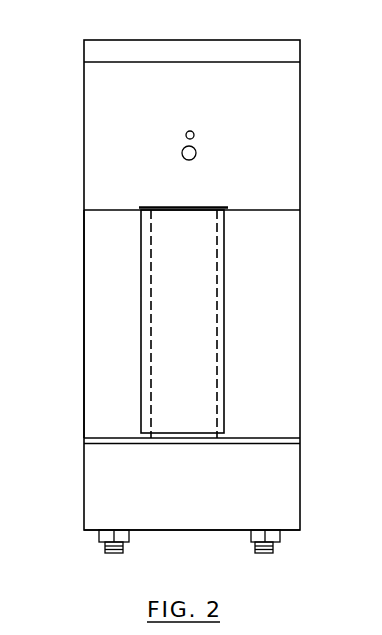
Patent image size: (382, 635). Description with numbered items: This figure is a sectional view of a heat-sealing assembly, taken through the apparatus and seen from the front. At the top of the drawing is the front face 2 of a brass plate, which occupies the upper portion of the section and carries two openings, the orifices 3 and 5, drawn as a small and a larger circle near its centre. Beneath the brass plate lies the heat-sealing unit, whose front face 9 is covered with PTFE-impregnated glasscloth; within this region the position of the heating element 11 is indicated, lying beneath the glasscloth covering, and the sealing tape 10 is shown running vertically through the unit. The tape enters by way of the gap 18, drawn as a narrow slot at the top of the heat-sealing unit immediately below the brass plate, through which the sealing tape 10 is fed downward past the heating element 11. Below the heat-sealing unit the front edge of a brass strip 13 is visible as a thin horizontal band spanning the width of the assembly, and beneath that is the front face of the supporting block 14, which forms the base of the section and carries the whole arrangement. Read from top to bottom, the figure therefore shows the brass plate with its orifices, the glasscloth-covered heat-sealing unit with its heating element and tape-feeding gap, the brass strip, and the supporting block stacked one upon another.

The front face 2 is at (91, 126).
The orifice 3 is at (196, 152).
The orifice 5 is at (194, 134).
The front face of the heat-sealing unit 9 is at (101, 272).
The sealing tape 10 is at (141, 363).
The heating element 11 is at (165, 325).
The brass strip 13 is at (84, 441).
The supporting block 14 is at (110, 490).
The gap 18 is at (193, 210).